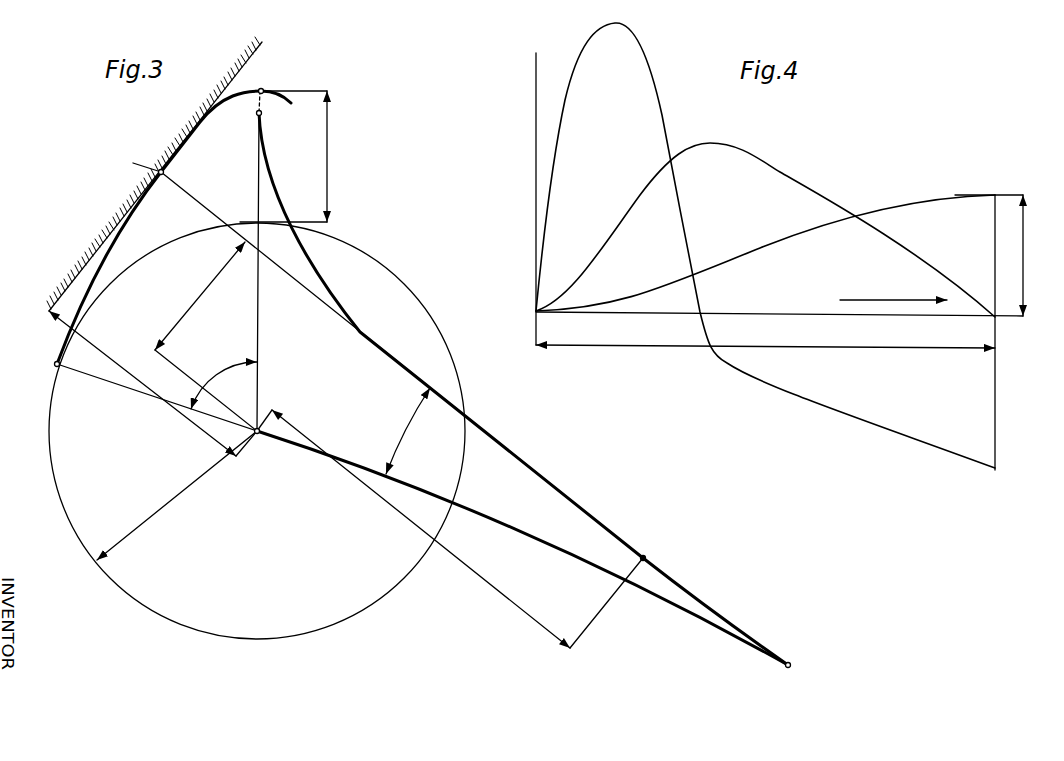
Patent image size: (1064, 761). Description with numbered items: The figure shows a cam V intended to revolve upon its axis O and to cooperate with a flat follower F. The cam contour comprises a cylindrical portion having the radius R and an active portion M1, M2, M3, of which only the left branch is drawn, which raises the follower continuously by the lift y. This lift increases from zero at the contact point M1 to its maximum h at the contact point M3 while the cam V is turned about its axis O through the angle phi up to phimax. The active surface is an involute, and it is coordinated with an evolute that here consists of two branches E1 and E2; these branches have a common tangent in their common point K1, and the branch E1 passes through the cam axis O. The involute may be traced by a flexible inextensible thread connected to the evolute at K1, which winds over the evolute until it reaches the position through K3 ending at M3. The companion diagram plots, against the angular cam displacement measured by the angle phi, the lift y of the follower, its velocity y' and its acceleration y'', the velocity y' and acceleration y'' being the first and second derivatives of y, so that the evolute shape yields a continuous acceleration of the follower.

In FIG. 3, the contact point M1 is at (54, 364).
In FIG. 3, the contact point M2 is at (161, 175).
In FIG. 3, the contact point M3 is at (263, 89).
In FIG. 3, the common point K1 is at (791, 663).
In FIG. 3, the evolute point K3 is at (261, 115).
In FIG. 3, the cam axis O is at (265, 442).
In FIG. 3, the flat follower F is at (139, 166).
In FIG. 3, the first evolute branch E1 is at (517, 526).
In FIG. 3, the second evolute branch E2 is at (478, 411).
In FIG. 3, the radius of cylindrical portion R is at (150, 517).
In FIG. 3, the cam V is at (174, 227).
In FIG. 4, the lift y is at (765, 238).
In FIG. 3, the velocity of the follower y' is at (206, 336).
In FIG. 4, the velocity of the follower y' is at (765, 230).
In FIG. 3, the acceleration of the follower y'' is at (450, 529).
In FIG. 4, the acceleration of the follower y'' is at (765, 245).
In FIG. 3, the maximum lift h is at (328, 132).
In FIG. 4, the maximum lift h is at (1023, 236).
In FIG. 3, the angle of cam displacement phi is at (408, 431).
In FIG. 4, the angle of cam displacement phi is at (893, 292).
In FIG. 3, the maximum cam angle phimax is at (224, 385).
In FIG. 4, the maximum cam angle phimax is at (765, 337).